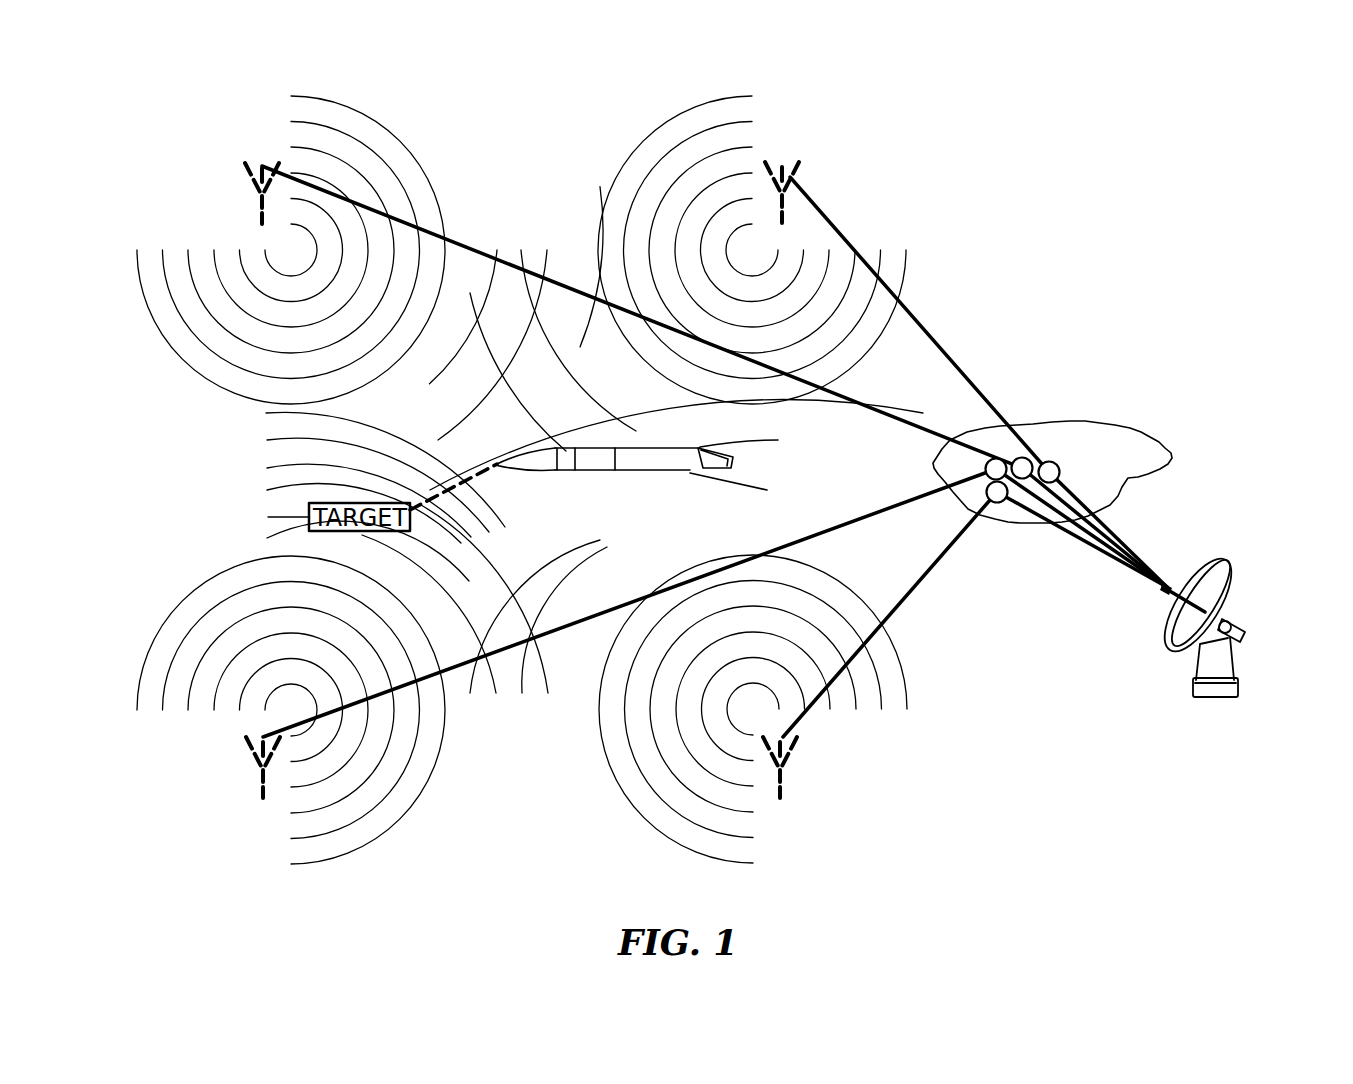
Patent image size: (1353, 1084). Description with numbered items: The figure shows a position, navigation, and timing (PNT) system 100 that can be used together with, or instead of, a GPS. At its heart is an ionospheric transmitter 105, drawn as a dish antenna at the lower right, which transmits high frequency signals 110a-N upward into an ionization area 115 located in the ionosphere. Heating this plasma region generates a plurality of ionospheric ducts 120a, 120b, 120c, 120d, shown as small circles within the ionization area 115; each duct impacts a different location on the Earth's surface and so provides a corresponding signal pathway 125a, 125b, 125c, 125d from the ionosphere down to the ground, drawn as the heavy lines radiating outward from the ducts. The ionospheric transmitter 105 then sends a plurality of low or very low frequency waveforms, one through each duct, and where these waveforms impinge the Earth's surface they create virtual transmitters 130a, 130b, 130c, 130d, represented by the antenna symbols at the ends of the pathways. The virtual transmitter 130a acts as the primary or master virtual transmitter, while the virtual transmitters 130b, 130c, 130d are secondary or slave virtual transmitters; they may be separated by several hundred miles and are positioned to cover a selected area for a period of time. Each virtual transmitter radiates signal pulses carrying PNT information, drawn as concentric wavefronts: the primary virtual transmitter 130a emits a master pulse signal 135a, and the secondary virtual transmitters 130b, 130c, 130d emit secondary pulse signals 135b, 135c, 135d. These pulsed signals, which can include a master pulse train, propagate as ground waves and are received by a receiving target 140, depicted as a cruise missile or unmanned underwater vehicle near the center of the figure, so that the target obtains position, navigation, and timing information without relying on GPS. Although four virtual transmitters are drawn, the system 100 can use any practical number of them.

The position, navigation, and timing (PNT) system 100 is at (1102, 67).
The ionospheric transmitter 105 is at (1223, 697).
The high frequency signals 110a-N is at (1157, 544).
The ionization area 115 is at (1143, 428).
The ionospheric duct 120a is at (1048, 461).
The ionospheric duct 120b is at (1017, 460).
The ionospheric duct 120c is at (985, 470).
The ionospheric duct 120d is at (996, 503).
The signal pathway 125a is at (934, 330).
The signal pathway 125b is at (463, 245).
The signal pathway 125c is at (570, 628).
The signal pathway 125d is at (922, 578).
The primary virtual transmitter 130a is at (798, 166).
The secondary virtual transmitter 130b is at (243, 167).
The secondary virtual transmitter 130c is at (245, 748).
The secondary virtual transmitter 130d is at (800, 748).
The master pulse signal 135a is at (748, 83).
The secondary pulse signal 135b is at (299, 83).
The secondary pulse signal 135c is at (209, 560).
The secondary pulse signal 135d is at (663, 858).
The receiving target 140 is at (643, 458).